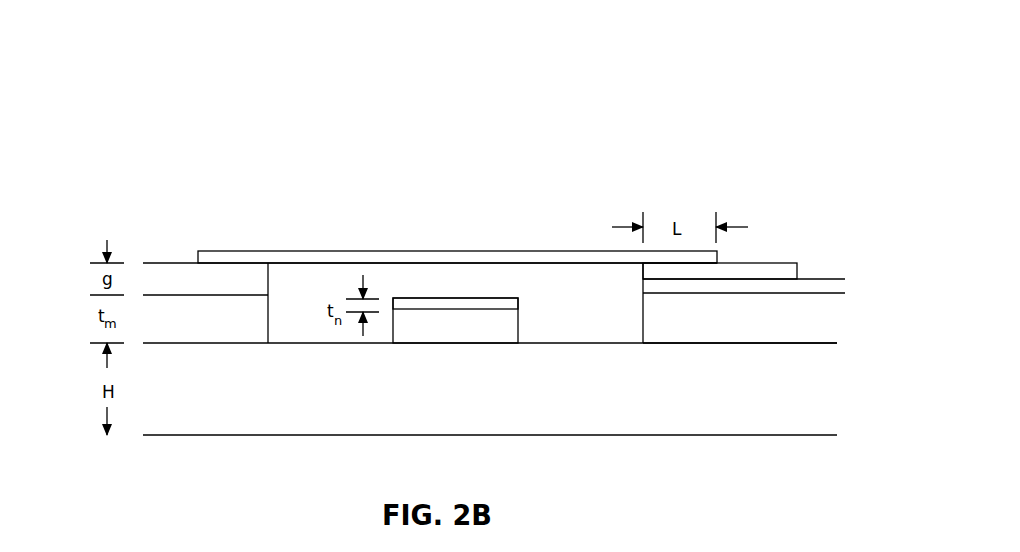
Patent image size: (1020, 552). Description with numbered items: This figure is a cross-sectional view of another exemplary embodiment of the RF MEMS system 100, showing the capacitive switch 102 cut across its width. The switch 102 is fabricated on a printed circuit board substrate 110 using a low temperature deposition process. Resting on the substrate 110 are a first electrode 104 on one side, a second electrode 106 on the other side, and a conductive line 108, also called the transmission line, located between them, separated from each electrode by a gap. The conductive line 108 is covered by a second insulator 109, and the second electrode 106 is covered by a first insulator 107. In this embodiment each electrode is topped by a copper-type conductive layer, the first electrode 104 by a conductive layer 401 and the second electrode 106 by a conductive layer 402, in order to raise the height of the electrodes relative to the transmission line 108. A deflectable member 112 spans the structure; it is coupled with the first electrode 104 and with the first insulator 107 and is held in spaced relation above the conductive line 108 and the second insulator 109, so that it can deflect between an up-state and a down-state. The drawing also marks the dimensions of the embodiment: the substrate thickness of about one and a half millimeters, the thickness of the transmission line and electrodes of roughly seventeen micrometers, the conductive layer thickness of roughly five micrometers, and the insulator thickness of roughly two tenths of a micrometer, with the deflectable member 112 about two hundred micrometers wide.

The RF MEMS system 100 is at (803, 168).
The capacitive switch 102 is at (563, 218).
The first electrode 104 is at (210, 332).
The second electrode 106 is at (725, 332).
The first insulator 107 is at (722, 271).
The conductive line 108 is at (477, 336).
The second insulator 109 is at (465, 302).
The substrate 110 is at (296, 398).
The deflectable member 112 is at (317, 256).
The conductive layer 401 is at (187, 286).
The conductive layer 402 is at (807, 285).